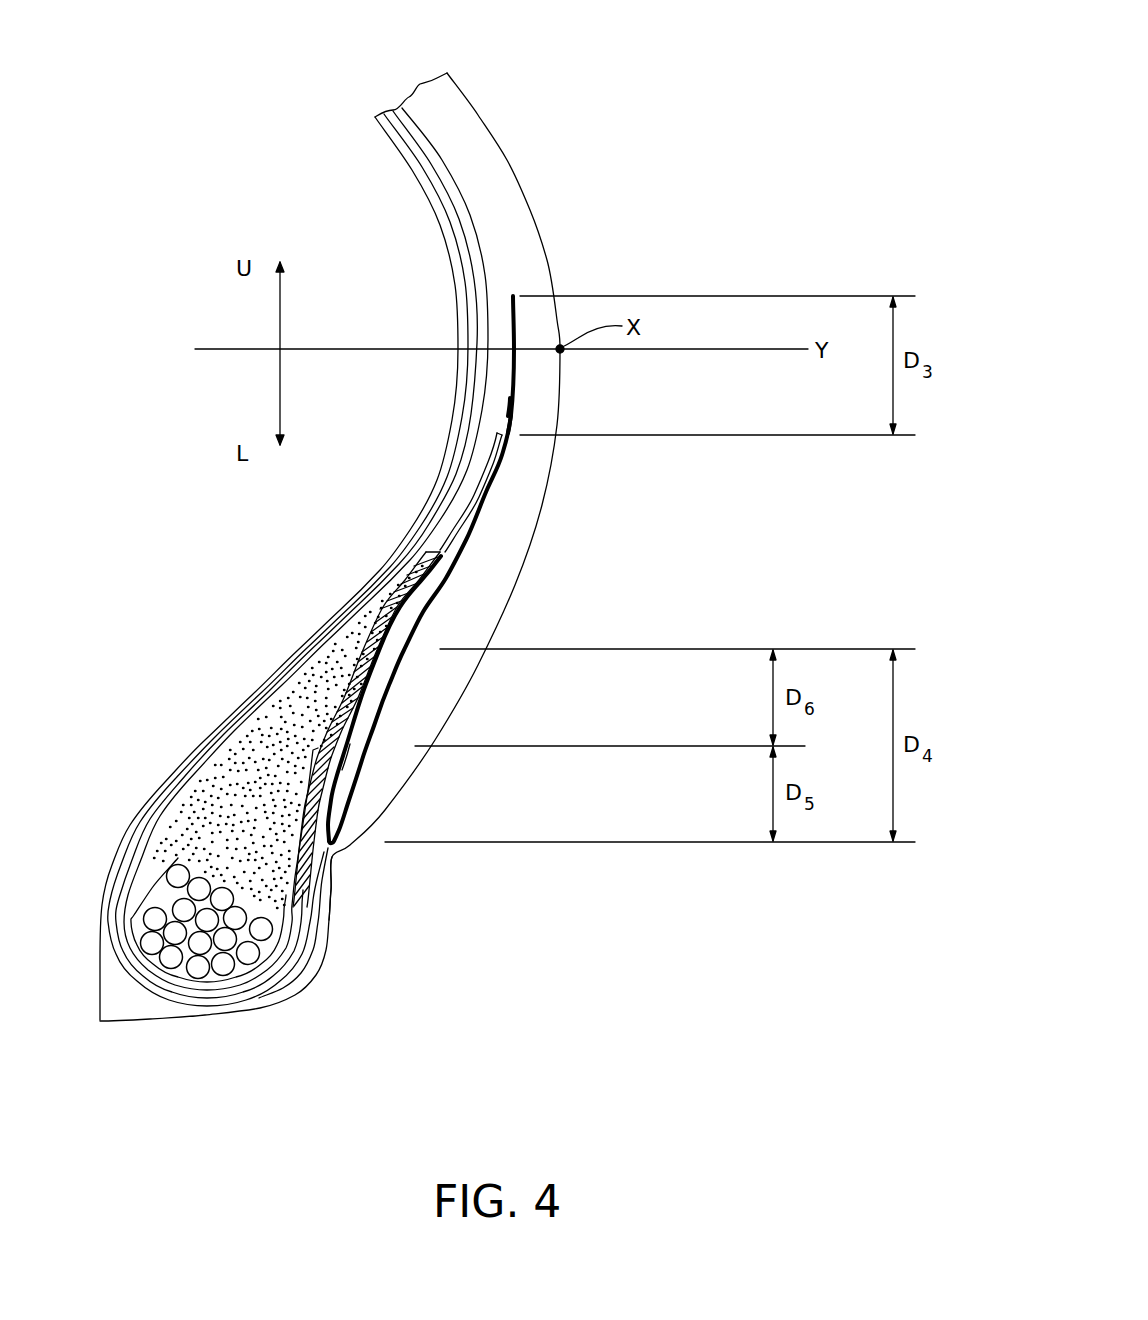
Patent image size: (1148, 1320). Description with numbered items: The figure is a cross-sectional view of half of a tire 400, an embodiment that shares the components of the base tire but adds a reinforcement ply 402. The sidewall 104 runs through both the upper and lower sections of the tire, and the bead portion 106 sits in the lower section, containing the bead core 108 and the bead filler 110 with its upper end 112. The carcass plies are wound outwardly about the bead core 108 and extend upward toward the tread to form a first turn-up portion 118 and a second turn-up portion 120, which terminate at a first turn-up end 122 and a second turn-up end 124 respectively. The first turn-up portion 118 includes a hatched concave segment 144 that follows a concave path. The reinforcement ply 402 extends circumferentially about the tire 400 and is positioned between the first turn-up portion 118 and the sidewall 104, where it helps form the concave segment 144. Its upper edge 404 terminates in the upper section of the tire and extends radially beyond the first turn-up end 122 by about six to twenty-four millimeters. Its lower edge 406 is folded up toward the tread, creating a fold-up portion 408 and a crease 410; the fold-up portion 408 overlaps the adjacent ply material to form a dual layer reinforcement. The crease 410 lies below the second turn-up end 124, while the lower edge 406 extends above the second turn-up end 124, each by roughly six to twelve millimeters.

The tire 400 is at (771, 105).
The sidewall 104 is at (508, 158).
The bead portion 106 is at (123, 823).
The bead core 108 is at (162, 900).
The bead filler 110 is at (222, 818).
The upper end 112 is at (431, 566).
The first turn-up portion 118 is at (424, 613).
The second turn-up portion 120 is at (298, 817).
The first turn-up end 122 is at (507, 405).
The second turn-up end 124 is at (313, 750).
The concave segment 144 is at (348, 747).
The reinforcement ply 402 is at (478, 522).
The upper edge 404 is at (513, 296).
The lower edge 406 is at (363, 695).
The fold-up portion 408 is at (352, 690).
The crease 410 is at (334, 853).